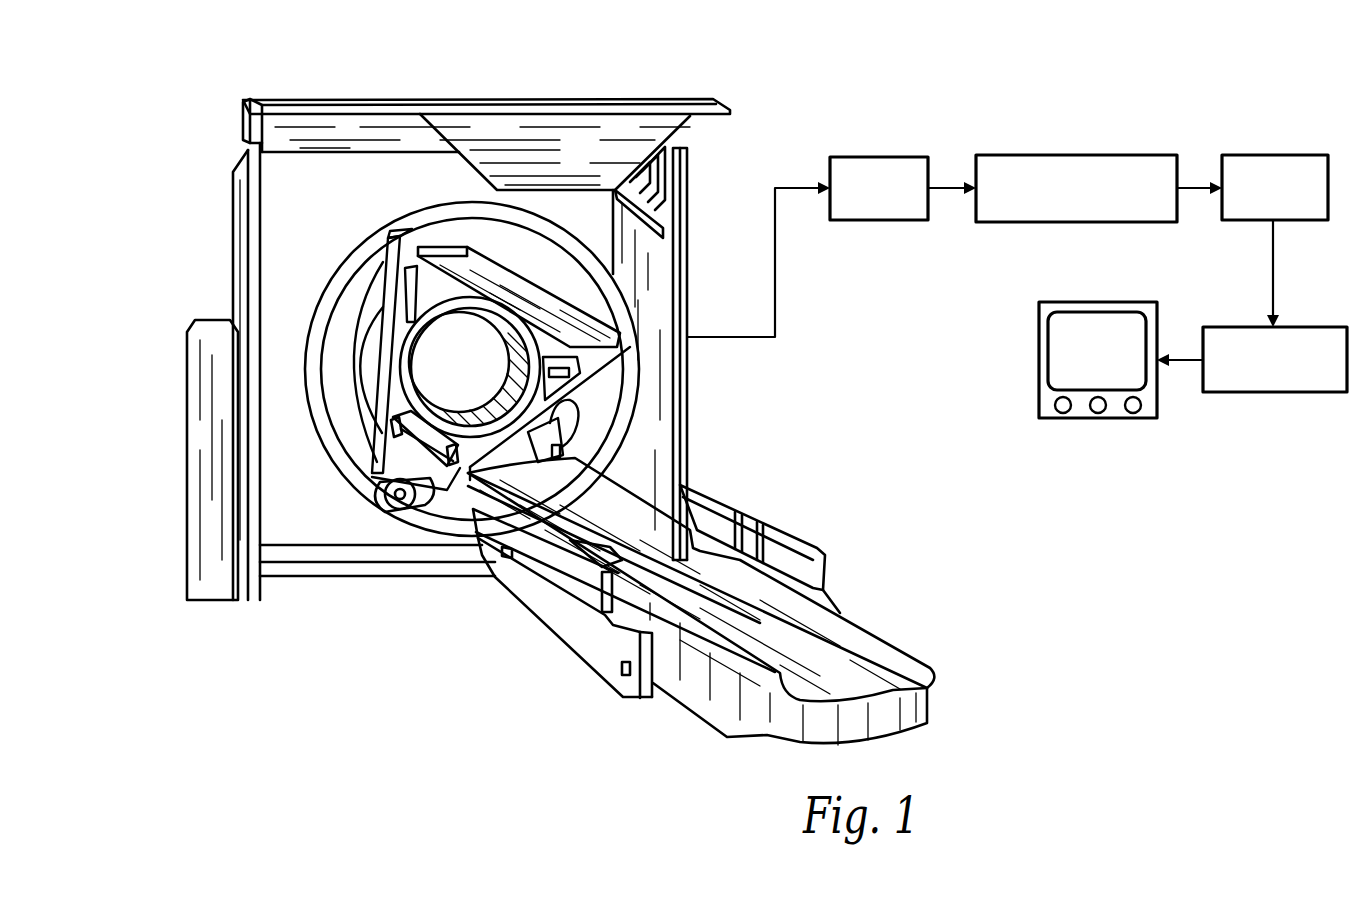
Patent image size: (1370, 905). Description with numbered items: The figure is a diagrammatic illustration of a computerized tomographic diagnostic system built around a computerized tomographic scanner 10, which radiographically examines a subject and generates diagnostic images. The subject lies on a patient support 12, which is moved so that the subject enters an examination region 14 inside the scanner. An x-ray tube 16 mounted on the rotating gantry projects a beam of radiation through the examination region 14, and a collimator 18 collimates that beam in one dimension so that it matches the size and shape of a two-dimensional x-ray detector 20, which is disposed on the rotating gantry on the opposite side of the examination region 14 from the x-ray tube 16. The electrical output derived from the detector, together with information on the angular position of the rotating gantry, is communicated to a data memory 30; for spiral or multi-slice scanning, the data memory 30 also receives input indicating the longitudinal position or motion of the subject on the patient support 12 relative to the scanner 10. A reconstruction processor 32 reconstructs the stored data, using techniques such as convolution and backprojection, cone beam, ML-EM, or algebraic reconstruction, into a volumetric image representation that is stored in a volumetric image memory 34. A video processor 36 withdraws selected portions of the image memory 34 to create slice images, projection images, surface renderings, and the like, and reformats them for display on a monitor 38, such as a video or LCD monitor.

The computerized tomographic scanner 10 is at (708, 84).
The patient support 12 is at (873, 655).
The examination region 14 is at (458, 348).
The x-ray tube 16 is at (386, 500).
The collimator 18 is at (425, 452).
The two-dimensional x-ray detector 20 is at (503, 246).
The data memory 30 is at (888, 157).
The reconstruction processor 32 is at (1093, 154).
The volumetric image memory 34 is at (1292, 154).
The video processor 36 is at (1293, 393).
The monitor 38 is at (1098, 420).